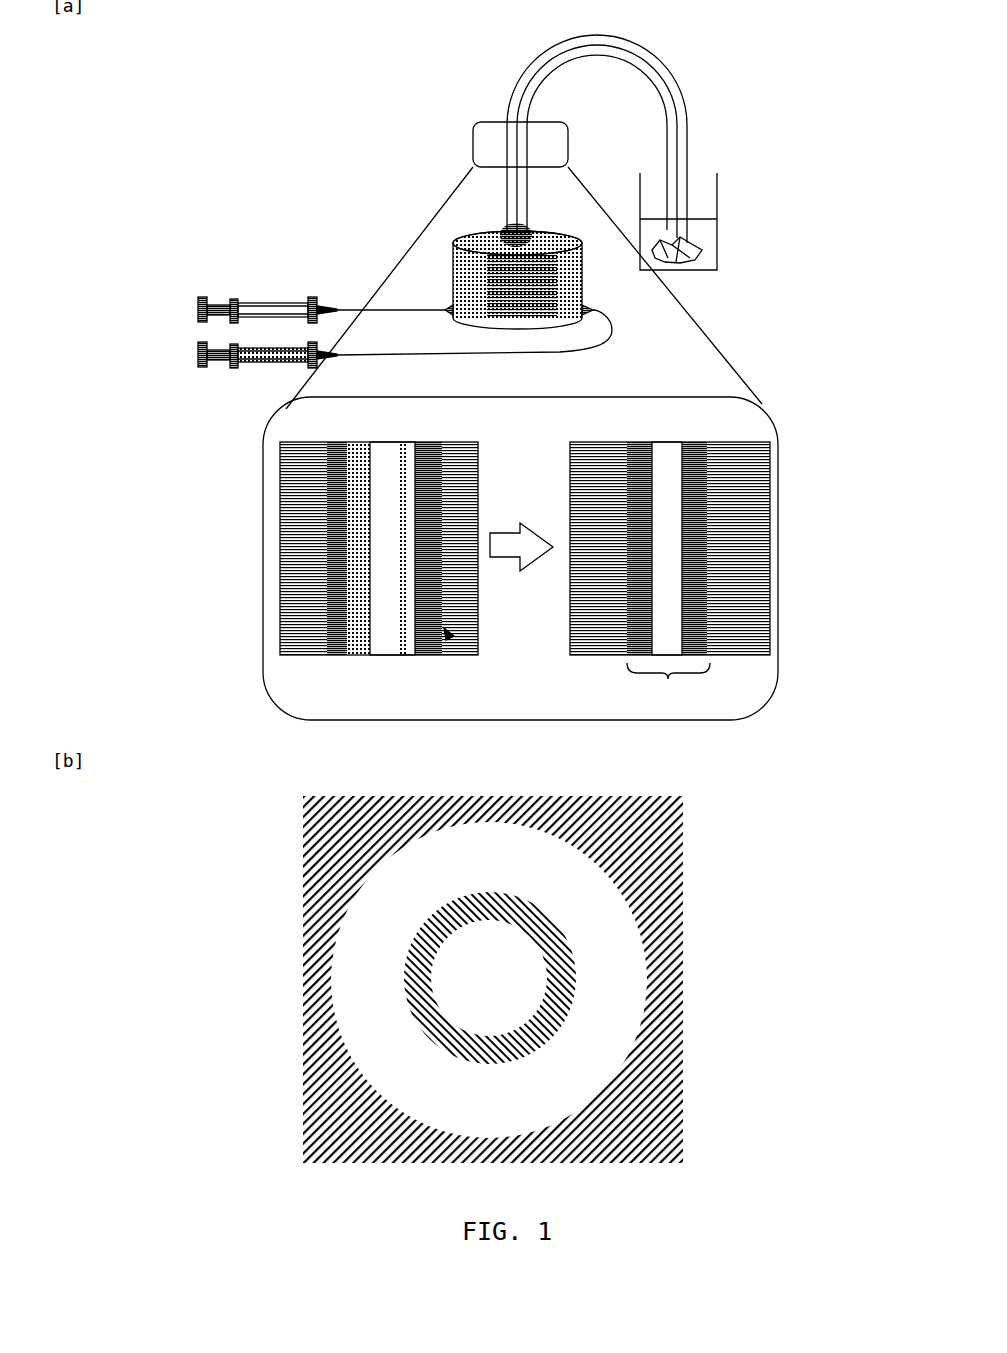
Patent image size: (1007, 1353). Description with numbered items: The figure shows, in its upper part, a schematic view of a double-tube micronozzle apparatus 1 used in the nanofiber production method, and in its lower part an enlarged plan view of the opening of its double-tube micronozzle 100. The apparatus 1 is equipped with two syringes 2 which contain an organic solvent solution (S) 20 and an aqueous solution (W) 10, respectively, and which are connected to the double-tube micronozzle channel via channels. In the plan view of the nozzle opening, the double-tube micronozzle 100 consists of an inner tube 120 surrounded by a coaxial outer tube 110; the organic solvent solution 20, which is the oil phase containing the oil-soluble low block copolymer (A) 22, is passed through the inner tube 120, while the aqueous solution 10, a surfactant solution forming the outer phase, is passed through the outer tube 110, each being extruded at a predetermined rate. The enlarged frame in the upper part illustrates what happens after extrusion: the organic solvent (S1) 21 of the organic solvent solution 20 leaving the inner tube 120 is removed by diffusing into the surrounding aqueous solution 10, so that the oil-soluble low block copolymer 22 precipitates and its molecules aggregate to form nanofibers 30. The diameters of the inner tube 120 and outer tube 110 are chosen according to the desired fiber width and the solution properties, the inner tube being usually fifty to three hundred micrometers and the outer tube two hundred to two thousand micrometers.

The double-tube micronozzle apparatus 1 is at (418, 173).
The syringes 2 is at (278, 348).
The aqueous solution (W) 10 is at (302, 624).
The organic solvent solution (S) 20 is at (526, 573).
The organic solvent (S1) 21 is at (385, 624).
The oil-soluble low block copolymer (A) 22 is at (585, 653).
The nanofibers 30 is at (668, 684).
The double-tube micronozzle 100 is at (501, 979).
The outer tube 110 is at (585, 893).
The inner tube 120 is at (517, 987).